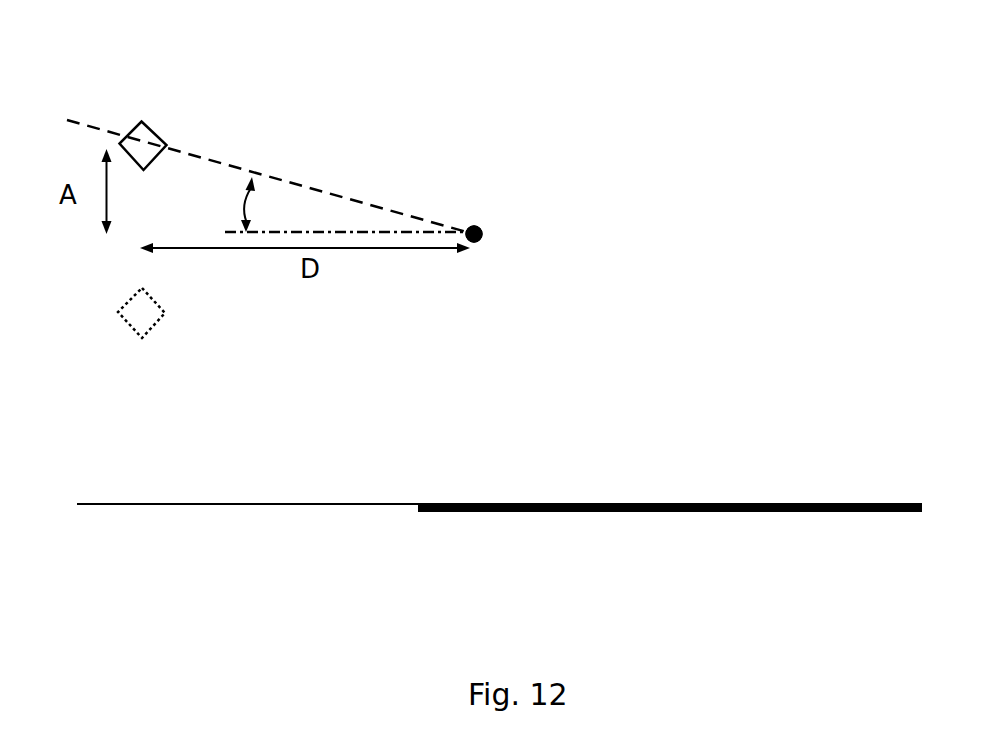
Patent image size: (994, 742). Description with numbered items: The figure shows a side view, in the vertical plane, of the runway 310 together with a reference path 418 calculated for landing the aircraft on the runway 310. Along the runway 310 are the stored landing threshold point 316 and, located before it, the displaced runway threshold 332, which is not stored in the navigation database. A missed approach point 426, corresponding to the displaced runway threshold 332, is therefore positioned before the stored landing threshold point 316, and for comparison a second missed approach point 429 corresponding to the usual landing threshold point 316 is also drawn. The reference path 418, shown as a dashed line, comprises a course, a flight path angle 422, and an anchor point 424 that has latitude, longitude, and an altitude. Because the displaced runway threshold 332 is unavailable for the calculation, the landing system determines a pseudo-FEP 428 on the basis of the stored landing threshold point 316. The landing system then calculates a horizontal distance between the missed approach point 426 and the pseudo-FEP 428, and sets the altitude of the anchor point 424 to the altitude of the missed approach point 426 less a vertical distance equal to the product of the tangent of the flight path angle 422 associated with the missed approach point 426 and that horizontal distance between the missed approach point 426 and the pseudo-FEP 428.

The reference path 418 is at (237, 168).
The flight path angle 422 is at (315, 215).
The anchor point 424 is at (480, 228).
The pseudo-FEP 428 is at (474, 234).
The missed approach point 426 is at (143, 122).
The second missed approach point 429 is at (118, 312).
The landing threshold point 316 is at (418, 512).
The displaced runway threshold 332 is at (747, 512).
The runway 310 is at (880, 512).